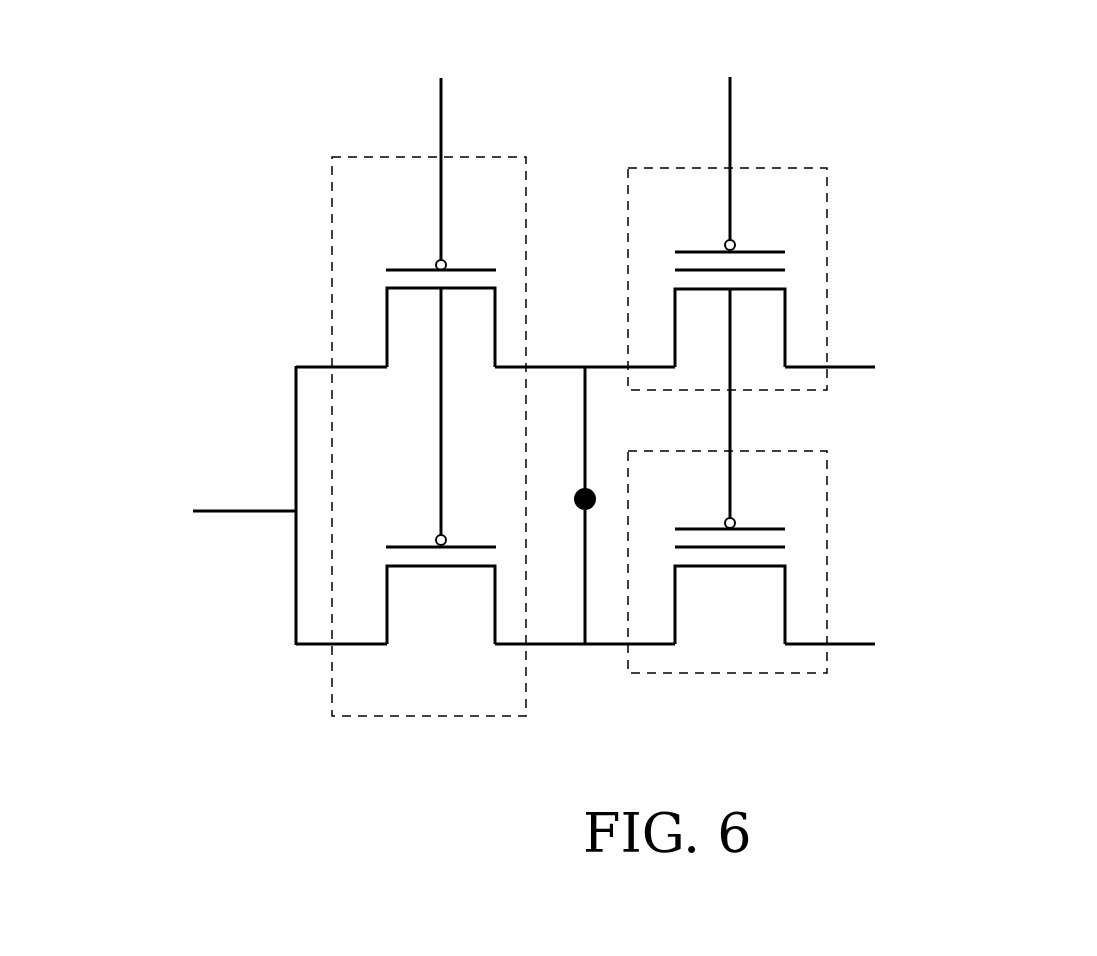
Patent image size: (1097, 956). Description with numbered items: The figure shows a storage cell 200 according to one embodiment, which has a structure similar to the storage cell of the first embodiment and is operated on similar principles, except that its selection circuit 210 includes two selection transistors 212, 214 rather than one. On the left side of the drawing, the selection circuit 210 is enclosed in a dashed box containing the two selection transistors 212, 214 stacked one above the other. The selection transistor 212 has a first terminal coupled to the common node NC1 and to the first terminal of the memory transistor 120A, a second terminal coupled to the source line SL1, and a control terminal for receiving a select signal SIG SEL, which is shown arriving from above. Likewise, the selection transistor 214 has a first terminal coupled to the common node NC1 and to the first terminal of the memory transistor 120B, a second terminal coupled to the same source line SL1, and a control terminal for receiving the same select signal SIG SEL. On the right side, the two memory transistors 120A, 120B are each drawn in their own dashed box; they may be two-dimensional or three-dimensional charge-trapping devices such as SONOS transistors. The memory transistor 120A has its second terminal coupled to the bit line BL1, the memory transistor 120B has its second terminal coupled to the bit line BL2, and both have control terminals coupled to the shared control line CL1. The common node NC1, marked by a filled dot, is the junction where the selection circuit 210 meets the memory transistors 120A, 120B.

The storage cell 200 is at (982, 148).
The selection circuit 210 is at (355, 717).
The selection transistor 212 is at (416, 315).
The selection transistor 214 is at (447, 625).
The memory transistor 120A is at (827, 240).
The memory transistor 120B is at (827, 523).
The source line SL1 is at (222, 511).
The control line CL1 is at (731, 112).
The bit line BL1 is at (855, 366).
The bit line BL2 is at (855, 643).
The common node NC1 is at (578, 508).
The select signal SIG is at (423, 135).